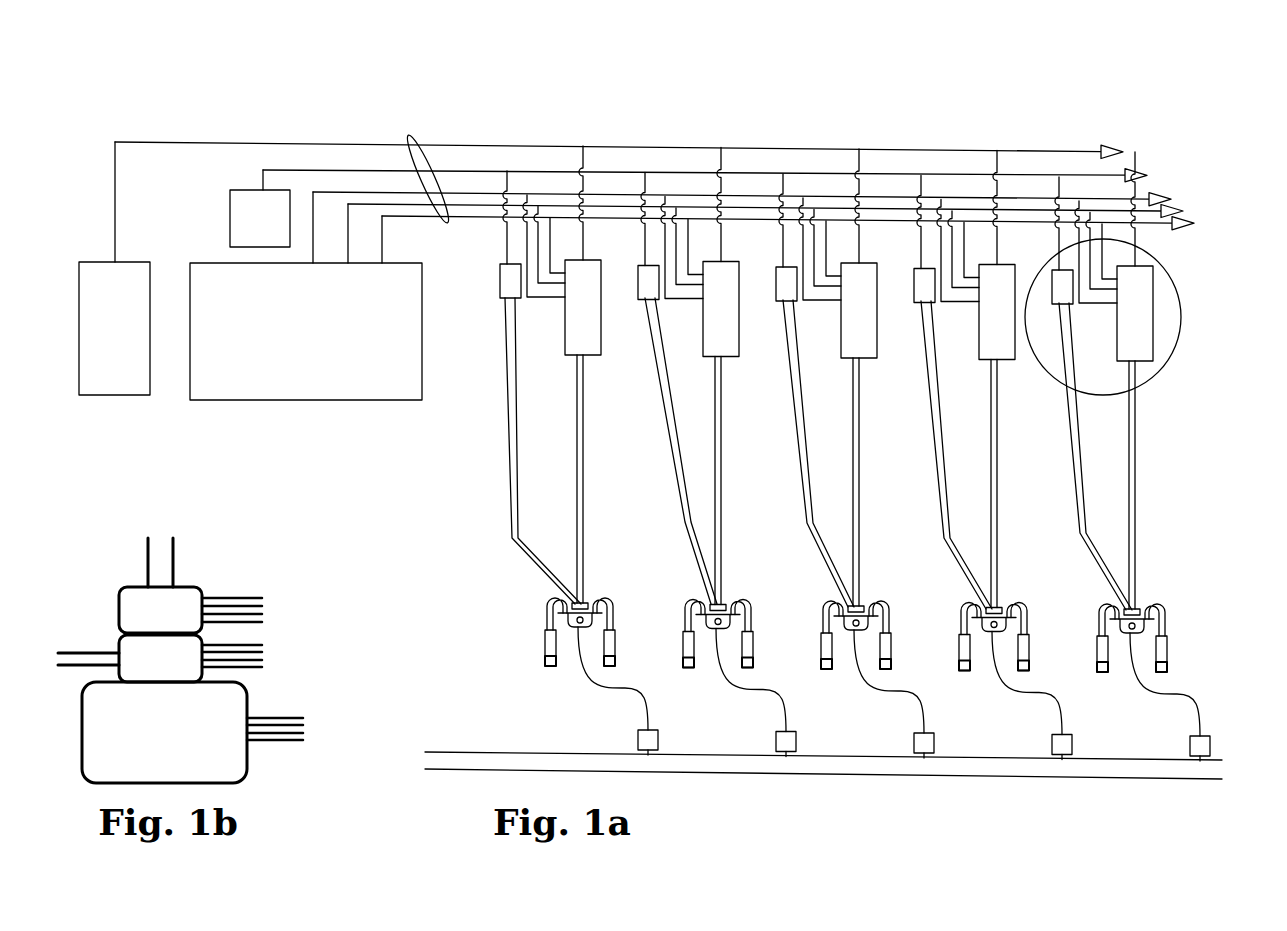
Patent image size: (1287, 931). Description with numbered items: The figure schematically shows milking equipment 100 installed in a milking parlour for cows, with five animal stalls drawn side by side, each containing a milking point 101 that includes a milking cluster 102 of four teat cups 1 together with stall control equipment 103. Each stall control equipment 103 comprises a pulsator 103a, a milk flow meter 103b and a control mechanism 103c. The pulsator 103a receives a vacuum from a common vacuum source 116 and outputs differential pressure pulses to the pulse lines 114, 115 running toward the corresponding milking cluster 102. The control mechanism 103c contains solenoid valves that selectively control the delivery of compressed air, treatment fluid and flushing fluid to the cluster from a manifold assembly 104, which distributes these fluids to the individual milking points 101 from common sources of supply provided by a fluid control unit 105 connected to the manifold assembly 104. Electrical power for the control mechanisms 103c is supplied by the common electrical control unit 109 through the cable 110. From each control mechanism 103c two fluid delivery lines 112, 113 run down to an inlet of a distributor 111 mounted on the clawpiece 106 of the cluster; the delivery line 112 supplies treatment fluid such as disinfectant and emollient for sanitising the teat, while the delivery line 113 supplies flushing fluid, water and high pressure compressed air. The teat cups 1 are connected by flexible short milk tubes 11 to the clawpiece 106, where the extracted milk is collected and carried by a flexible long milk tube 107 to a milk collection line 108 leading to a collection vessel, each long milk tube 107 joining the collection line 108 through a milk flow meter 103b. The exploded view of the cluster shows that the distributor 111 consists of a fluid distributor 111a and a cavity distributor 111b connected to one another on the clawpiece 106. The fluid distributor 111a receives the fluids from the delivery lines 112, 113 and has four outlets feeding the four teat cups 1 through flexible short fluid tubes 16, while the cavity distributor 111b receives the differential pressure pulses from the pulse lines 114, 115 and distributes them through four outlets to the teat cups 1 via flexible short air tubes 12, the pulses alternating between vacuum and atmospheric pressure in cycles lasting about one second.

In FIG. 1a, the teat cup 1 is at (835, 645).
In FIG. 1a, the flexible short milk tube 11 is at (630, 610).
In FIG. 1b, the flexible short milk tube 11 is at (309, 715).
In FIG. 1a, the flexible short air tube 12 is at (811, 609).
In FIG. 1b, the flexible short air tube 12 is at (268, 595).
In FIG. 1a, the flexible short fluid tube 16 is at (517, 603).
In FIG. 1b, the flexible short fluid tube 16 is at (268, 642).
In FIG. 1a, the milking equipment 100 is at (417, 493).
In FIG. 1a, the milking point 101 is at (818, 127).
In FIG. 1a, the milking cluster 102 is at (755, 627).
In FIG. 1a, the stall control equipment 103 is at (1168, 360).
In FIG. 1a, the pulsator 103a is at (508, 278).
In FIG. 1a, the milk flow meter 103b is at (637, 742).
In FIG. 1a, the control mechanism 103c is at (585, 343).
In FIG. 1a, the manifold assembly 104 is at (410, 140).
In FIG. 1a, the fluid control unit 105 is at (282, 345).
In FIG. 1a, the clawpiece 106 is at (546, 667).
In FIG. 1b, the clawpiece 106 is at (141, 746).
In FIG. 1a, the flexible long milk tube 107 is at (652, 722).
In FIG. 1a, the milk collection line 108 is at (658, 765).
In FIG. 1a, the electrical control unit 109 is at (91, 340).
In FIG. 1a, the cable 110 is at (190, 142).
In FIG. 1a, the distributor 111 is at (615, 576).
In FIG. 1b, the fluid distributor 111a is at (133, 673).
In FIG. 1b, the cavity distributor 111b is at (133, 624).
In FIG. 1a, the fluid delivery line 112 is at (585, 493).
In FIG. 1b, the fluid delivery line 112 is at (75, 668).
In FIG. 1a, the fluid delivery line 113 is at (575, 538).
In FIG. 1b, the fluid delivery line 113 is at (82, 650).
In FIG. 1a, the pulse line 114 is at (787, 420).
In FIG. 1b, the pulse line 114 is at (148, 563).
In FIG. 1a, the pulse line 115 is at (800, 454).
In FIG. 1b, the pulse line 115 is at (173, 560).
In FIG. 1a, the vacuum source 116 is at (238, 233).